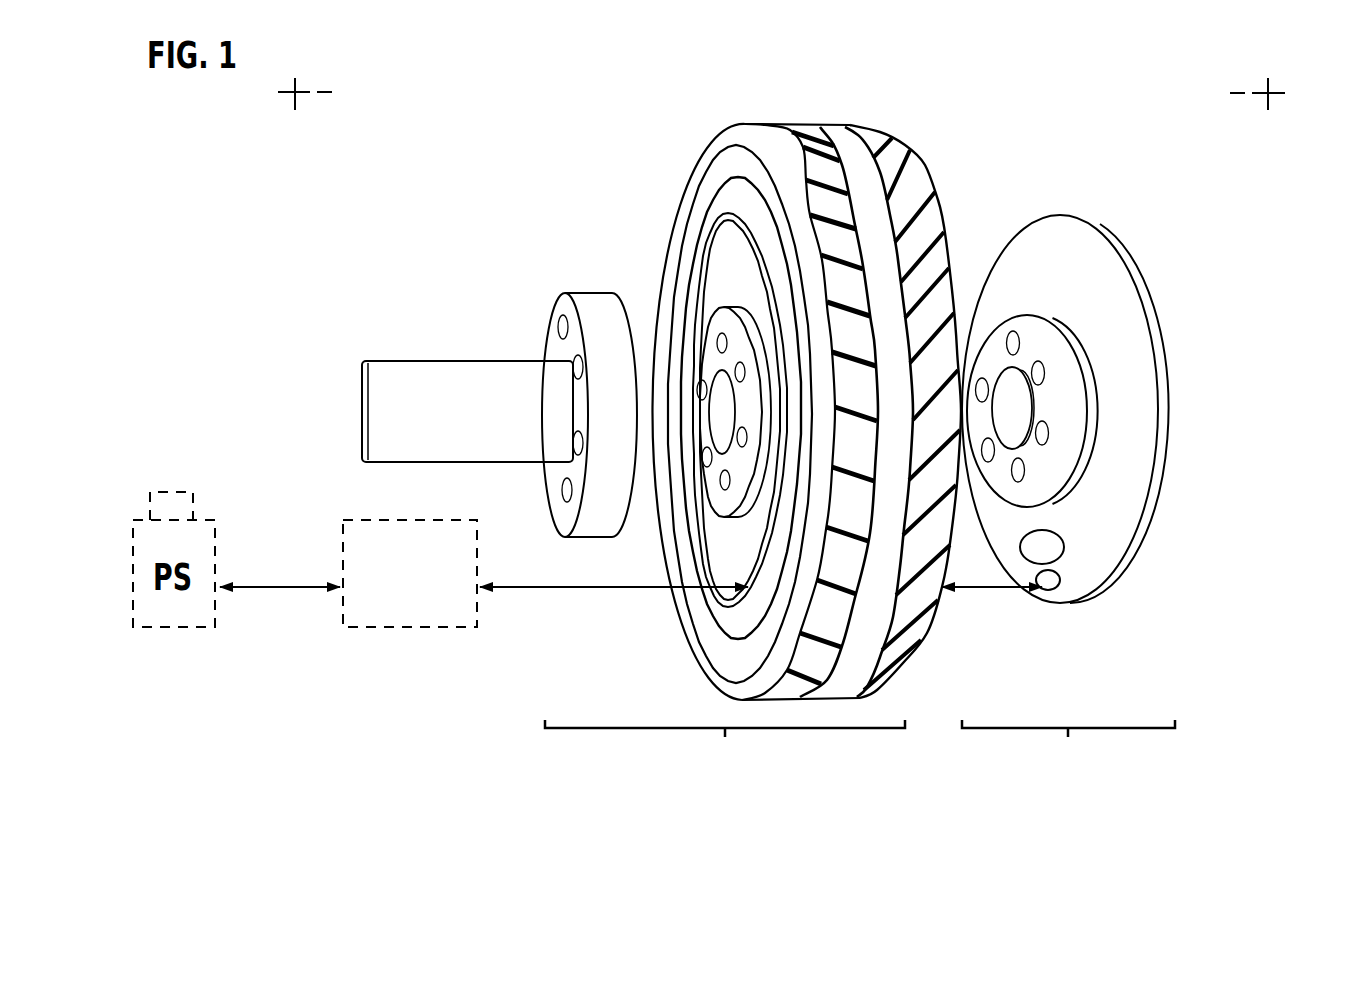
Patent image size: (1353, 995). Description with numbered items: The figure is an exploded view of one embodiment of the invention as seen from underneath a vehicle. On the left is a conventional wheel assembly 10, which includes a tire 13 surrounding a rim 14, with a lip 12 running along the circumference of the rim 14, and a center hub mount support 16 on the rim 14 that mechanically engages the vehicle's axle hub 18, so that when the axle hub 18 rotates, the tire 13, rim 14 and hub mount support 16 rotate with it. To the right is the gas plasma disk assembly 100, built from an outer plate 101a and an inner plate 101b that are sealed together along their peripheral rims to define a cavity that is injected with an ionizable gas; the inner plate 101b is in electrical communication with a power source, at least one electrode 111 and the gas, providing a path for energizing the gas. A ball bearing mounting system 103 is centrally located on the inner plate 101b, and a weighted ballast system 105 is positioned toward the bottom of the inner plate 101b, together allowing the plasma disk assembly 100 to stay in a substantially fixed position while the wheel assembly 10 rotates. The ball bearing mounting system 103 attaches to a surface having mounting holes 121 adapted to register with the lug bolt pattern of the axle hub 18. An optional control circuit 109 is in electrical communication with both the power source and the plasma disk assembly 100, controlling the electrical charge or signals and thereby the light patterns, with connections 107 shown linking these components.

The wheel assembly 10 is at (725, 756).
The lip 12 is at (745, 207).
The tire 13 is at (878, 185).
The rim 14 is at (757, 290).
The center hub mount support 16 is at (737, 345).
The axle hub 18 is at (590, 297).
The gas plasma disk assembly 100 is at (1068, 756).
The outer plate 101a is at (1137, 259).
The inner plate 101b is at (1059, 252).
The ball bearing mounting system 103 is at (1080, 383).
The weighted ballast system 105 is at (1063, 535).
The signal connection 107 is at (572, 602).
The control circuit 109 is at (348, 573).
The electrode 111 is at (1066, 578).
The mounting holes 121 is at (1012, 335).